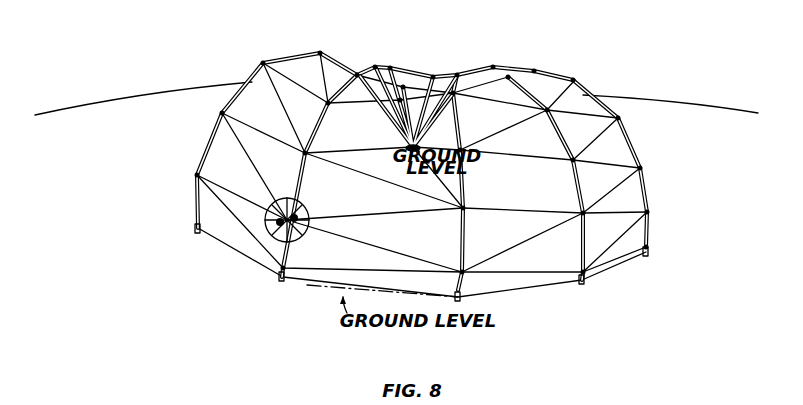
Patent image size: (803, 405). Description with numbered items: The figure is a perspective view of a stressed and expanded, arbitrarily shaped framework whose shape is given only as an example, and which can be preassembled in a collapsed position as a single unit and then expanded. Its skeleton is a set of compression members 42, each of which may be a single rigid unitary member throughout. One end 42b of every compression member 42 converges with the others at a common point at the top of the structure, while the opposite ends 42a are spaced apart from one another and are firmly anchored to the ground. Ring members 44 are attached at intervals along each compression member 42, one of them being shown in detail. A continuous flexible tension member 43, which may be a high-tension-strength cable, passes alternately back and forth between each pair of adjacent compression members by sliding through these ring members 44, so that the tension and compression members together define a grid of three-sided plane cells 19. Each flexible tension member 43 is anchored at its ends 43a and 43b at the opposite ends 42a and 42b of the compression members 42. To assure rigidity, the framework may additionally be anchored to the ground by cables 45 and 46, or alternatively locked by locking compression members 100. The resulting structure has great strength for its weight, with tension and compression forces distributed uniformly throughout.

The panel opening 19 is at (478, 127).
The compression member 42 is at (208, 141).
The opposite end of compression member 42a is at (195, 228).
The end of compression member 42b is at (423, 146).
The continuous flexible tension member 43 is at (266, 133).
The end of tension member 43a is at (202, 234).
The end of tension member 43b is at (408, 146).
The ring member 44 is at (263, 63).
The cable 45 is at (135, 97).
The cable 46 is at (720, 110).
The locking compression member 100 is at (306, 72).